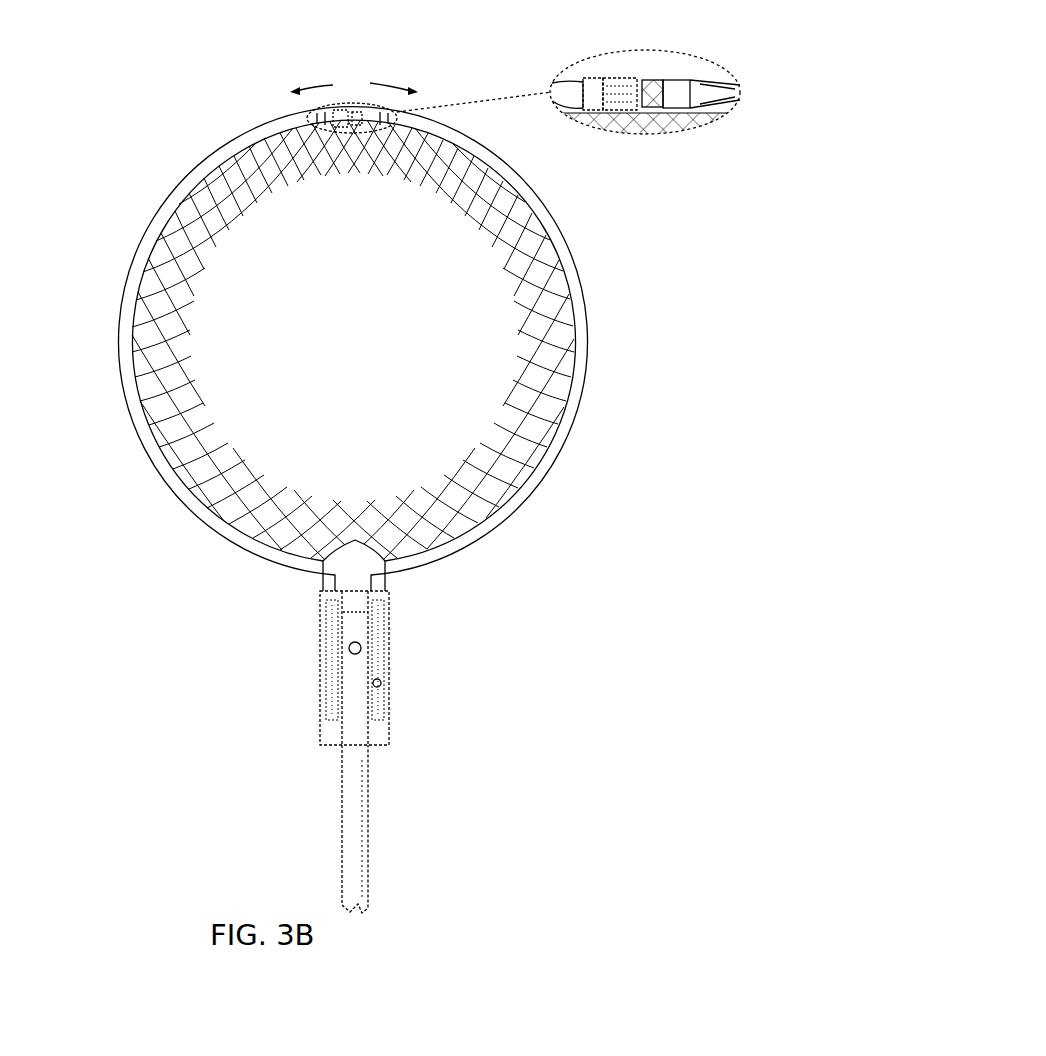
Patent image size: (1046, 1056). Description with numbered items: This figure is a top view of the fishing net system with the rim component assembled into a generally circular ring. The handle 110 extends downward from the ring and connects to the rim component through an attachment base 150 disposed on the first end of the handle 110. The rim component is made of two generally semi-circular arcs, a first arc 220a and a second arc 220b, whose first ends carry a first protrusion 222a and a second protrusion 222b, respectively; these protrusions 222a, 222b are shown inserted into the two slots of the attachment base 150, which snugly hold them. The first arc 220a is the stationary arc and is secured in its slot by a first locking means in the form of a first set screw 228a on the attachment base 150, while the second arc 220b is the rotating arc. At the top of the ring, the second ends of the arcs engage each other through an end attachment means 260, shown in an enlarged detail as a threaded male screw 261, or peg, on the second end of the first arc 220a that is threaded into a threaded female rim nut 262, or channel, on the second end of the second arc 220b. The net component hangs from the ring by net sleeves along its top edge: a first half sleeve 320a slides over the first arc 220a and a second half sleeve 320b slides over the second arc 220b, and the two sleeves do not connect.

The handle 110 is at (370, 845).
The attachment base 150 is at (390, 700).
The first arc 220a is at (445, 349).
The first half sleeve 320a is at (583, 397).
The second arc 220b is at (302, 340).
The second half sleeve 320b is at (207, 160).
The first protrusion 222a is at (382, 630).
The second protrusion 222b is at (328, 620).
The first set screw 228a is at (381, 683).
The end attachment means 260 is at (351, 112).
The threaded male screw 261 is at (658, 82).
The threaded female rim nut 262 is at (618, 78).